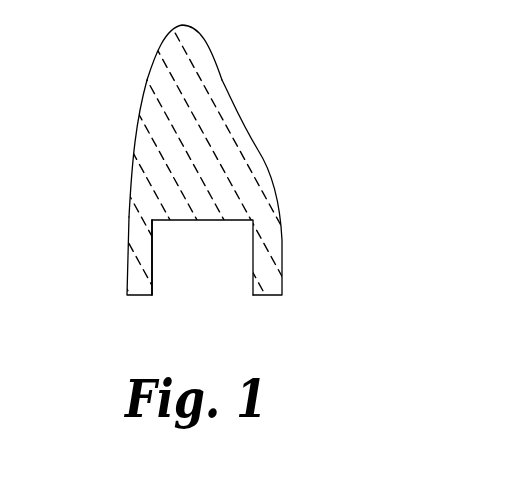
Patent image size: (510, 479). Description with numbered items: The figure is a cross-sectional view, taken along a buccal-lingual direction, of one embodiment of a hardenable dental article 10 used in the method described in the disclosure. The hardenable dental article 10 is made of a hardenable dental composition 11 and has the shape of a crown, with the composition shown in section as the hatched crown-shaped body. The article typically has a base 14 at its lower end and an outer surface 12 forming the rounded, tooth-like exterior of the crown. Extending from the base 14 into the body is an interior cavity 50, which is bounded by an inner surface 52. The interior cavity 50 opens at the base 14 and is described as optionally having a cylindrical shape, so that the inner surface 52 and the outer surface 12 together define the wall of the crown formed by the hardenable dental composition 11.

The hardenable dental article 10 is at (310, 48).
The hardenable dental composition 11 is at (153, 89).
The outer surface 12 is at (212, 52).
The base 14 is at (135, 289).
The interior cavity 50 is at (238, 278).
The inner surface 52 is at (153, 275).